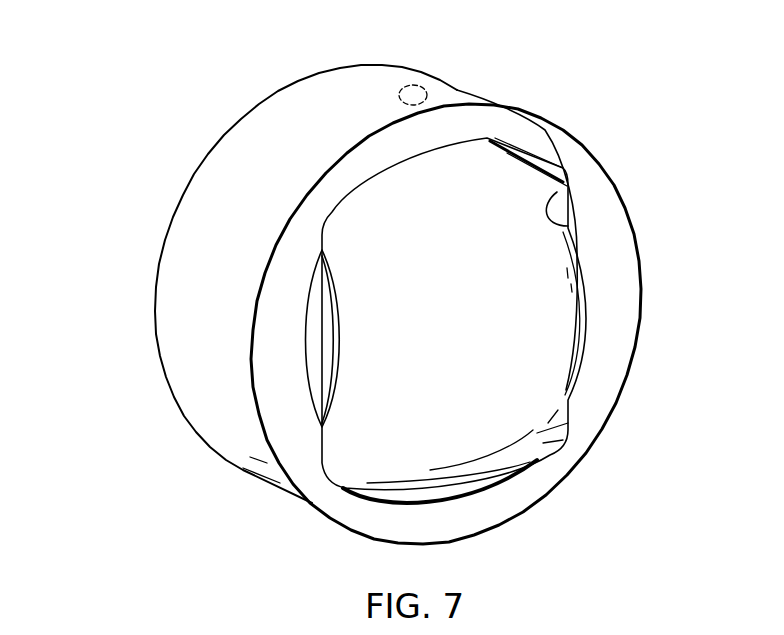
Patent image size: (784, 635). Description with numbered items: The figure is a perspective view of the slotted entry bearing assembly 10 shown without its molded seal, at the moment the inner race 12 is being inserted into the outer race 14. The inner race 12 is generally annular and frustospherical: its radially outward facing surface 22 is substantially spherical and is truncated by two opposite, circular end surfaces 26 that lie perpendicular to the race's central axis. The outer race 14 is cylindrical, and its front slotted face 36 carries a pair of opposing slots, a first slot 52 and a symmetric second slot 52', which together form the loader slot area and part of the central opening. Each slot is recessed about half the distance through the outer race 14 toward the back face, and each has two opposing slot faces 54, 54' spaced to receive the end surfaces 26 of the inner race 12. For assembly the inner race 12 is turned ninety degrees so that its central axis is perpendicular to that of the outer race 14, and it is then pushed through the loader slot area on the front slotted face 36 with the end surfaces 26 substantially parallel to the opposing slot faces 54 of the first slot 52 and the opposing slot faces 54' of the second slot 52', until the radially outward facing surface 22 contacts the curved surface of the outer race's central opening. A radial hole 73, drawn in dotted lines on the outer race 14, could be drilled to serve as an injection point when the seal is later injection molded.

The slotted entry bearing assembly 10 is at (131, 113).
The inner race 12 is at (522, 298).
The outer race 14 is at (200, 300).
The radially outward facing surface 22 is at (447, 203).
The end surfaces 26 is at (333, 385).
The front slotted face 36 is at (607, 347).
The first slot 52 is at (563, 144).
The second slot 52' is at (491, 510).
The opposing slot faces 54 is at (613, 209).
The opposing slot faces 54' is at (609, 453).
The radial hole 73 is at (412, 88).